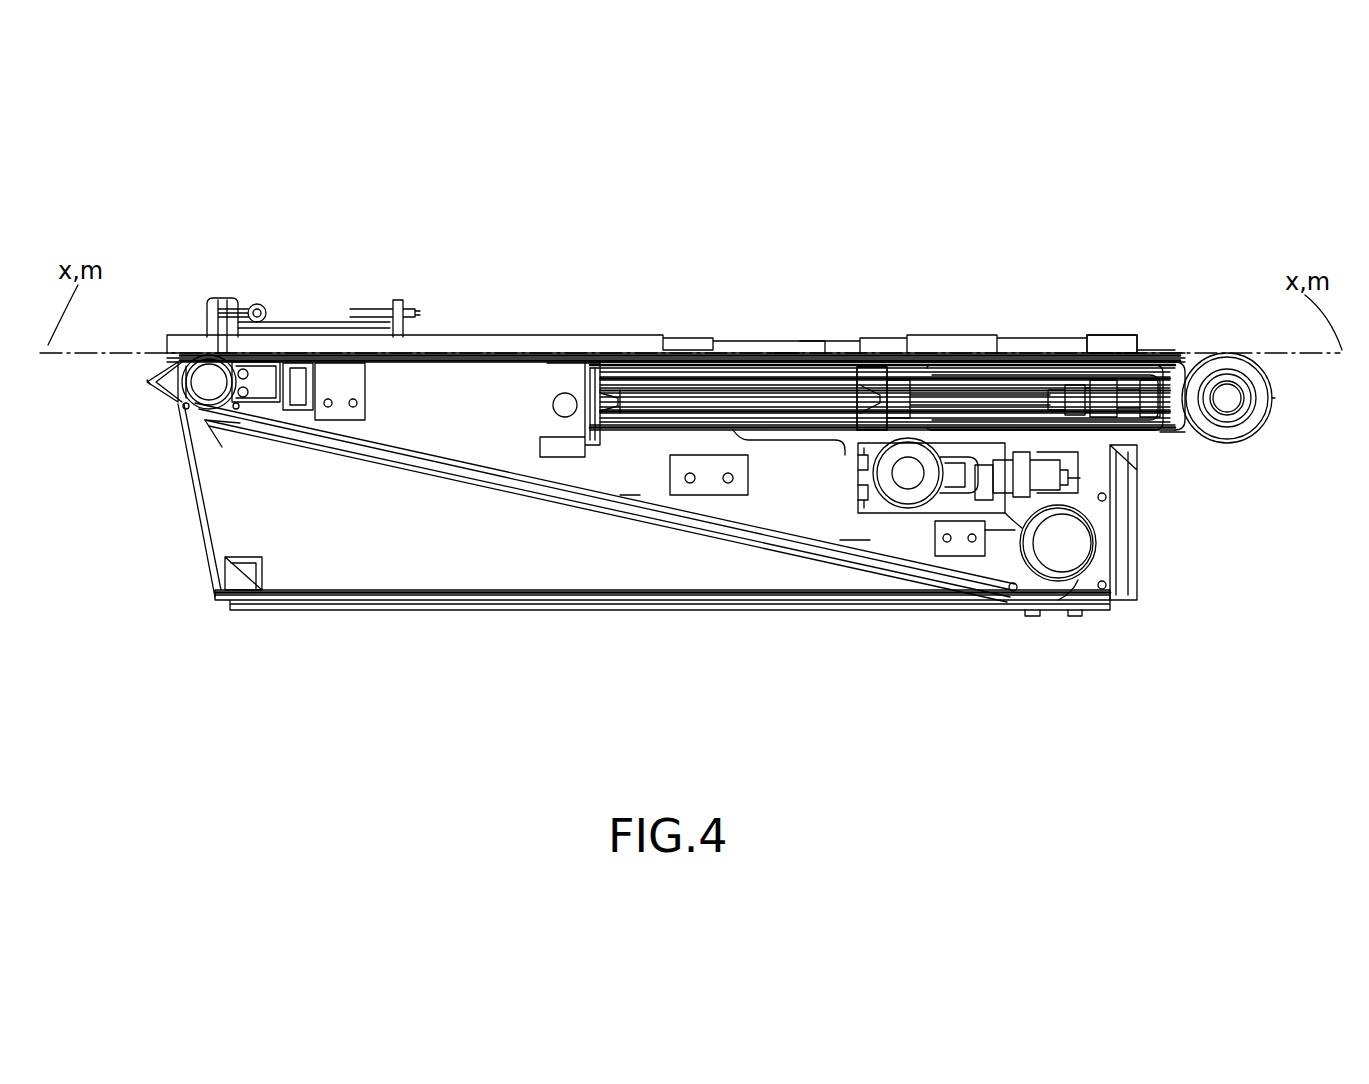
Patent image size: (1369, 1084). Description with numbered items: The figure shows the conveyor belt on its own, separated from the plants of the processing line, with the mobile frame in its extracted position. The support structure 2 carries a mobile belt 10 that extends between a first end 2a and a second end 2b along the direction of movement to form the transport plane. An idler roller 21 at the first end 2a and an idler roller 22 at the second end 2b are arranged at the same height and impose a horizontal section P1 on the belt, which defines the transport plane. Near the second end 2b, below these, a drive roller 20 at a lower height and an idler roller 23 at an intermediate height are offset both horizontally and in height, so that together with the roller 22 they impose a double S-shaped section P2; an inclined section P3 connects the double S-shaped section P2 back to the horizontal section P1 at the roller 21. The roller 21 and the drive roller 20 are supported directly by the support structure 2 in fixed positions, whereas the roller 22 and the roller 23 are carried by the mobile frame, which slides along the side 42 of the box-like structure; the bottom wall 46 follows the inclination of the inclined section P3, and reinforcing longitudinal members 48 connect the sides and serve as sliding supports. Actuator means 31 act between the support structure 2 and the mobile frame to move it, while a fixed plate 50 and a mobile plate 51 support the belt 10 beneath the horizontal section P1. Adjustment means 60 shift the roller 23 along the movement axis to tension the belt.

The support structure 2 is at (258, 622).
The first end 2a is at (155, 408).
The second end 2b is at (1278, 414).
The mobile belt 10 is at (810, 345).
The drive roller 20 is at (1098, 585).
The idler roller 21 is at (208, 375).
The idler roller 22 is at (1228, 408).
The idler roller 23 is at (910, 478).
The actuator means 31 is at (700, 395).
The side 42 is at (307, 552).
The bottom wall 46 is at (497, 482).
The reinforcing longitudinal member 48 is at (345, 390).
The fixed plate 50 is at (863, 400).
The mobile plate 51 is at (1175, 353).
The adjustment means 60 is at (1005, 510).
The horizontal section P1 is at (783, 352).
The double S-shaped section P2 is at (1080, 492).
The inclined section P3 is at (630, 492).